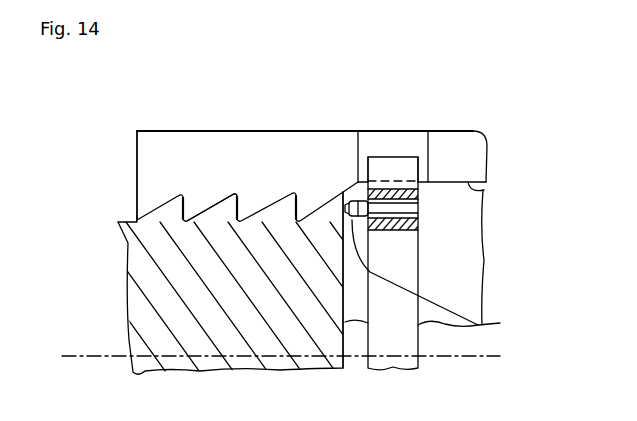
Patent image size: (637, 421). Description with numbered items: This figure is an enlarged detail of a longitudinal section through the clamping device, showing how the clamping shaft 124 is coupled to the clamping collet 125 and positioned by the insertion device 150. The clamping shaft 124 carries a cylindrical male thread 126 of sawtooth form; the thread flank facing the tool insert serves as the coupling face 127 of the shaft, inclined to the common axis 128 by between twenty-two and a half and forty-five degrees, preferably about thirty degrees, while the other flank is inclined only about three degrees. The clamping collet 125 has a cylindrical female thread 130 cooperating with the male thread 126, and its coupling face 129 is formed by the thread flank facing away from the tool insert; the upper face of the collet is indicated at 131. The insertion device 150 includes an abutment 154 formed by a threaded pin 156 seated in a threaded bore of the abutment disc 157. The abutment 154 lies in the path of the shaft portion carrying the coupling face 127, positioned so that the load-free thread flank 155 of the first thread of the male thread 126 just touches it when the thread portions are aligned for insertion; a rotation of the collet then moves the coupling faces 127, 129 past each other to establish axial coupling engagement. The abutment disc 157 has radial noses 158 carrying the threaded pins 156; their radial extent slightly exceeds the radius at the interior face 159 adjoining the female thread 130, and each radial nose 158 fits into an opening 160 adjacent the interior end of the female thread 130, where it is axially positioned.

The clamping shaft 124 is at (157, 230).
The clamping collet 125 is at (134, 144).
The male thread 126 is at (122, 216).
The coupling face 127 is at (160, 200).
The common axis 128 is at (80, 356).
The coupling face 129 is at (233, 200).
The female thread 130 is at (124, 198).
The top face 131 is at (304, 126).
The insertion device 150 is at (410, 95).
The abutment 154 is at (358, 280).
The load-free thread flank 155 is at (478, 325).
The threaded pin 156 is at (358, 208).
The abutment disc 157 is at (453, 267).
The radial nose 158 is at (400, 172).
The interior face 159 is at (484, 190).
The opening 160 is at (377, 131).